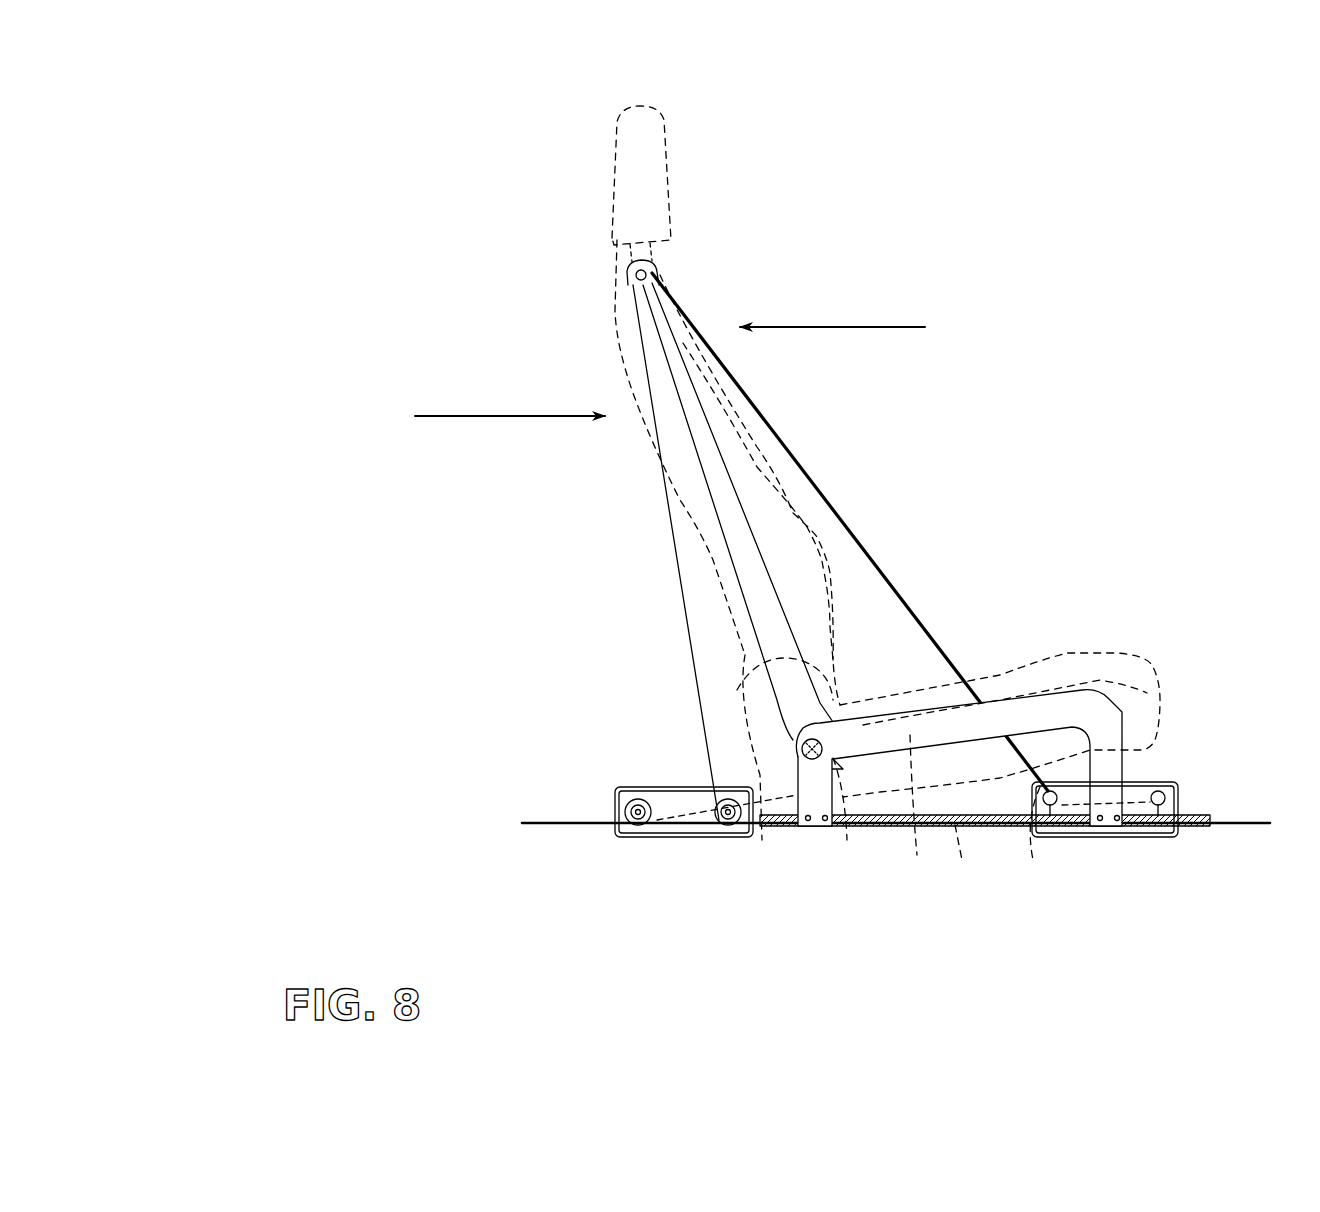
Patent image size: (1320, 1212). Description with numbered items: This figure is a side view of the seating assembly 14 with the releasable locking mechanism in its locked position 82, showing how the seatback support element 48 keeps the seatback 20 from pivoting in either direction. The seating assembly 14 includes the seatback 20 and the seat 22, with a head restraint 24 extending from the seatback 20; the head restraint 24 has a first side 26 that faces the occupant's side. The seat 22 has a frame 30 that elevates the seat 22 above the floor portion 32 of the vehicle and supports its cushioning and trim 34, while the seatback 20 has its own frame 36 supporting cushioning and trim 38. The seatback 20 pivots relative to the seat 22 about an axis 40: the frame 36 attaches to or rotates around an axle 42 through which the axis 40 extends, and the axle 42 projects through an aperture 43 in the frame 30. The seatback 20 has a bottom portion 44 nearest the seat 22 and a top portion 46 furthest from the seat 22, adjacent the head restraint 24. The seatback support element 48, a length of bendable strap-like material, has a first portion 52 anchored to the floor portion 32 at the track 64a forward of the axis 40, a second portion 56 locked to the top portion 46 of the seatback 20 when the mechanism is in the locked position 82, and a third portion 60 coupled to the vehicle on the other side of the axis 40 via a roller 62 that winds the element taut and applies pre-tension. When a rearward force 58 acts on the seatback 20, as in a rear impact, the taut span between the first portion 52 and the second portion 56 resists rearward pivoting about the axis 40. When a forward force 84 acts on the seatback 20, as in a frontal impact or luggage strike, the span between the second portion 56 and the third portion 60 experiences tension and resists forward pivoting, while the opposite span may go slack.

The seating assembly 14 is at (1147, 660).
The seatback 20 is at (767, 483).
The seat 22 is at (1018, 688).
The head restraint 24 is at (670, 148).
The first side 26 is at (636, 210).
The frame 30 is at (912, 830).
The floor portion 32 is at (1232, 827).
The cushioning and trim 34 is at (1073, 672).
The frame 36 is at (753, 592).
The cushioning and trim 38 is at (843, 640).
The axis 40 is at (782, 830).
The axle 42 is at (800, 760).
The aperture 43 is at (843, 830).
The bottom portion 44 is at (778, 705).
The top portion 46 is at (640, 307).
The seatback support element 48 is at (856, 530).
The first portion 52 is at (1030, 830).
The second portion 56 is at (635, 262).
The rearward force 58 is at (815, 327).
The third portion 60 is at (705, 820).
The roller 62 is at (732, 830).
The track 64a is at (955, 830).
The locked position 82 is at (617, 271).
The forward force 84 is at (497, 417).